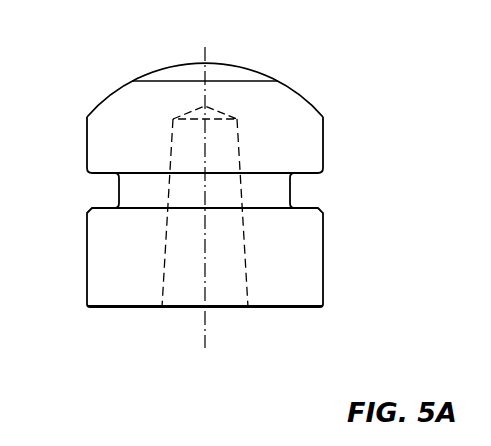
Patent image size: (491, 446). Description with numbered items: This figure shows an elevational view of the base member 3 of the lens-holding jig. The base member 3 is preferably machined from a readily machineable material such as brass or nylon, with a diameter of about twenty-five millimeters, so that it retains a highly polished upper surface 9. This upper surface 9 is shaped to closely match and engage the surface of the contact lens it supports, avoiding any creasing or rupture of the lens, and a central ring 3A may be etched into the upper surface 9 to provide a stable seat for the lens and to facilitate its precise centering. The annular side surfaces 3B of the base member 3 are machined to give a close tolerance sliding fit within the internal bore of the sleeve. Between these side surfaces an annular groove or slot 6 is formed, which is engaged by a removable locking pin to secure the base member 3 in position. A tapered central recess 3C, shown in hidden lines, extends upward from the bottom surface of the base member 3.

The upper surface 9 is at (112, 90).
The central ring 3A is at (168, 81).
The annular side surfaces 3B is at (308, 142).
The annular groove 6 is at (120, 192).
The base member 3 is at (113, 298).
The tapered central recess 3C is at (242, 278).